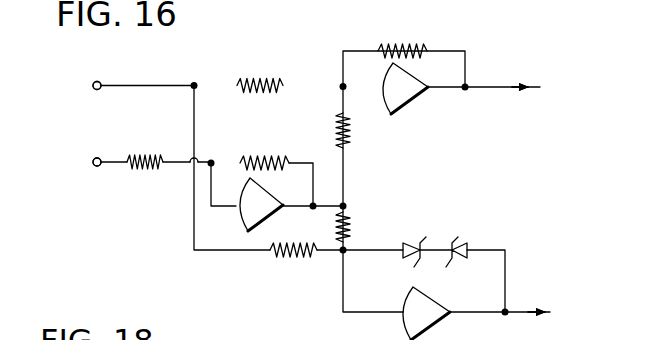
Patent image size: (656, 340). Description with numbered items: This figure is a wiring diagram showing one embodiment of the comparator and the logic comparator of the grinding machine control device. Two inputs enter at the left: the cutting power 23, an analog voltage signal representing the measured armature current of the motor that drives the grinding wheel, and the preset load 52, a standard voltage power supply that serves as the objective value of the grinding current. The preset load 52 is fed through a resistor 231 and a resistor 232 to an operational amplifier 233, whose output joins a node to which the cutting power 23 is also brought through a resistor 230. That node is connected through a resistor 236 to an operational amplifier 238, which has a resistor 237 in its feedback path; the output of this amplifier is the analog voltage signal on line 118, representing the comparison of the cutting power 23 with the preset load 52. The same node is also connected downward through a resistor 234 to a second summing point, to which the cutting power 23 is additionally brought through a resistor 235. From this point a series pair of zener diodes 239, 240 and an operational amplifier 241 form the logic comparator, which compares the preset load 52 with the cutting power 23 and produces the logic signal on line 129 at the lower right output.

The cutting power 23 is at (79, 85).
The preset load 52 is at (79, 162).
The line 118 is at (549, 88).
The line 129 is at (564, 312).
The resistor 230 is at (237, 80).
The resistor 231 is at (124, 157).
The resistor 232 is at (240, 159).
The operational amplifier 233 is at (269, 210).
The resistor 234 is at (348, 213).
The resistor 235 is at (278, 266).
The resistor 236 is at (350, 118).
The resistor 237 is at (380, 45).
The operational amplifier 238 is at (418, 102).
The zener diode 239 is at (427, 236).
The zener diode 240 is at (478, 236).
The operational amplifier 241 is at (435, 318).